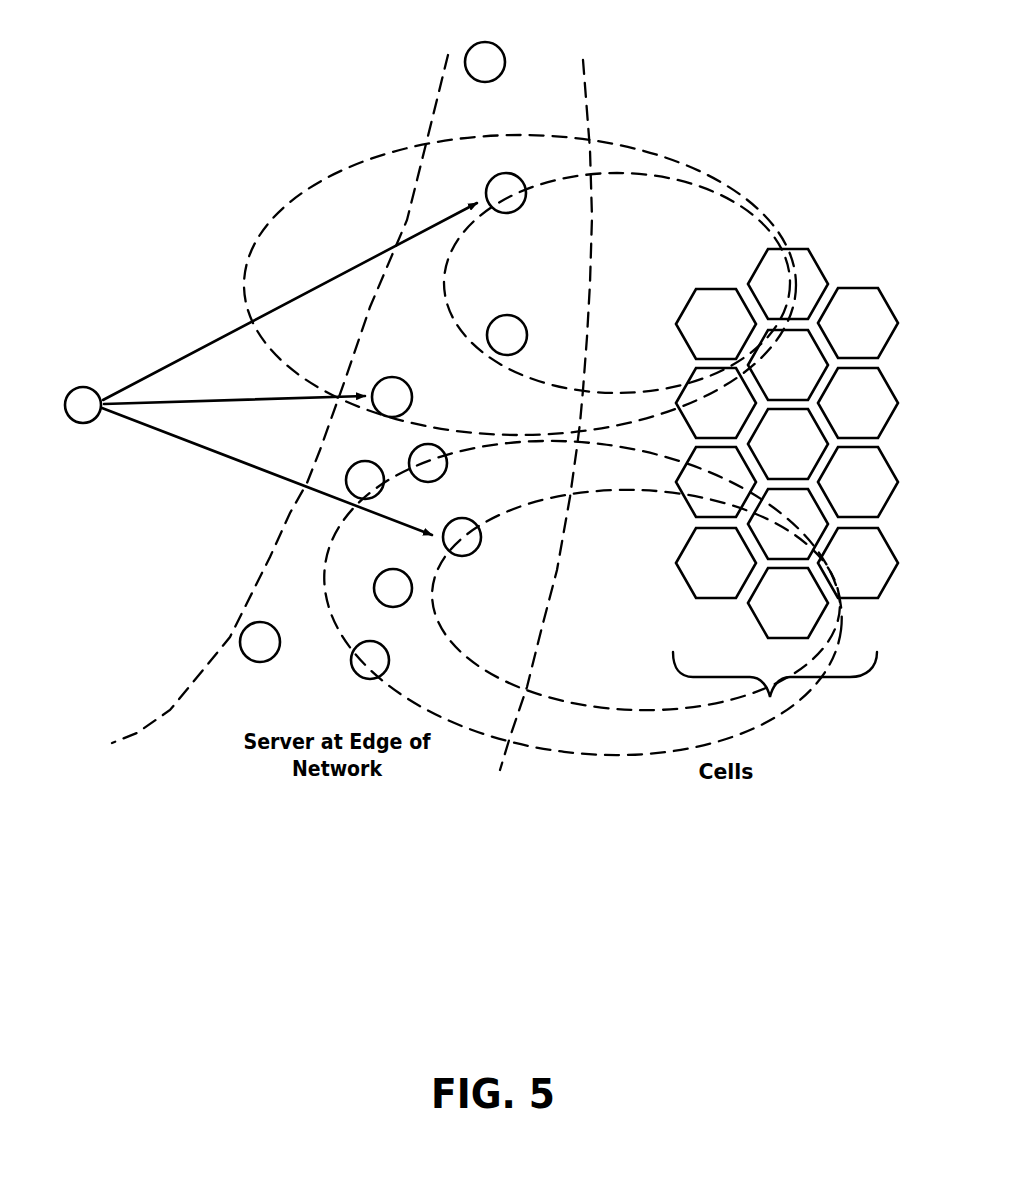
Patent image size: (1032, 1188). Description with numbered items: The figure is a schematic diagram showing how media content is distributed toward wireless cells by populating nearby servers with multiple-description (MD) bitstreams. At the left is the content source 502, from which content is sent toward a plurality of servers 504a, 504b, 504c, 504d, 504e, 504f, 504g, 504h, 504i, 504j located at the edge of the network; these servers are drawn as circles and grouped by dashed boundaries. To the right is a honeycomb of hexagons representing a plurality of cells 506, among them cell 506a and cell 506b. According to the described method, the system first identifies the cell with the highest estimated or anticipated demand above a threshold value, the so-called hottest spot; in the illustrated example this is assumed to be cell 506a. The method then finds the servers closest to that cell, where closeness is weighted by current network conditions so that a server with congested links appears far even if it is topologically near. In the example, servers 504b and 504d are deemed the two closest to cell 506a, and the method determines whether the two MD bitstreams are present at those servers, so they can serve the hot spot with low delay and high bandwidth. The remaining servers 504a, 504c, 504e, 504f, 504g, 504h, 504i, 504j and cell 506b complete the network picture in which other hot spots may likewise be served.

The content source 502 is at (82, 387).
The server 504a is at (465, 62).
The server 504b is at (488, 191).
The server 504c is at (516, 318).
The server 504d is at (399, 378).
The server 504e is at (410, 459).
The server 504f is at (348, 476).
The server 504g is at (465, 518).
The server 504h is at (412, 588).
The server 504i is at (241, 643).
The server 504j is at (389, 661).
The cells 506 is at (785, 493).
The cell 506a is at (718, 289).
The cell 506b is at (835, 627).